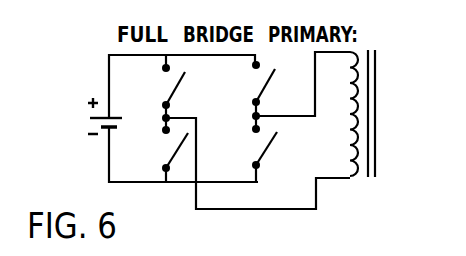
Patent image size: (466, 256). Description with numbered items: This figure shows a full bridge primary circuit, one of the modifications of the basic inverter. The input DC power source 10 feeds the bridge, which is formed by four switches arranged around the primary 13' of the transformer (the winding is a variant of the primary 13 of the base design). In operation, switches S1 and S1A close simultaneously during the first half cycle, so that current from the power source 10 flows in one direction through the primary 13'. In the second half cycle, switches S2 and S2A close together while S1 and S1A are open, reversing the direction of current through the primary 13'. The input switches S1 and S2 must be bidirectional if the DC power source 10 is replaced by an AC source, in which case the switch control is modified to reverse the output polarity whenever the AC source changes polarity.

The input DC power source 10 is at (96, 126).
The transformer primary winding 13 is at (347, 113).
The primary 13' is at (347, 113).
The switch S1 is at (161, 86).
The switch S2 is at (162, 143).
The switch S1A is at (249, 140).
The switch S2A is at (246, 83).